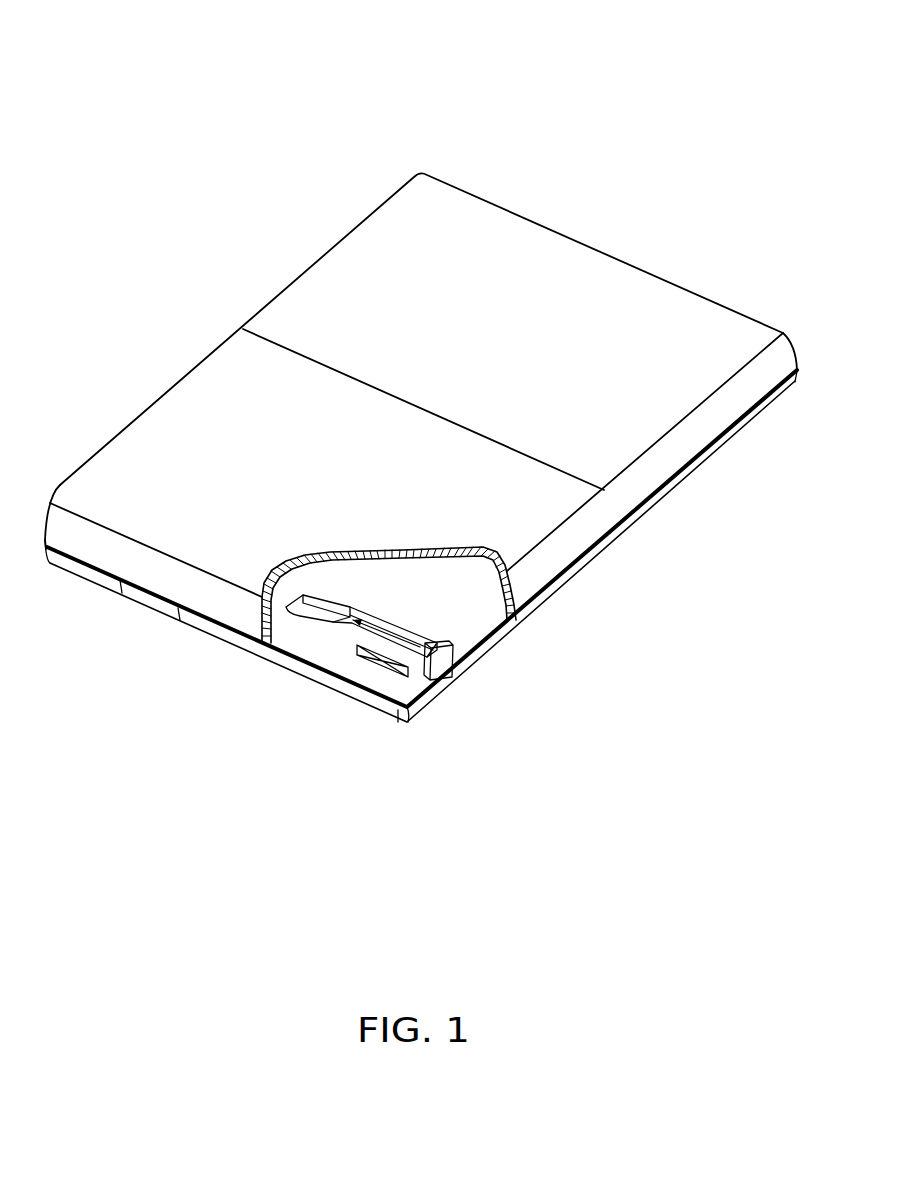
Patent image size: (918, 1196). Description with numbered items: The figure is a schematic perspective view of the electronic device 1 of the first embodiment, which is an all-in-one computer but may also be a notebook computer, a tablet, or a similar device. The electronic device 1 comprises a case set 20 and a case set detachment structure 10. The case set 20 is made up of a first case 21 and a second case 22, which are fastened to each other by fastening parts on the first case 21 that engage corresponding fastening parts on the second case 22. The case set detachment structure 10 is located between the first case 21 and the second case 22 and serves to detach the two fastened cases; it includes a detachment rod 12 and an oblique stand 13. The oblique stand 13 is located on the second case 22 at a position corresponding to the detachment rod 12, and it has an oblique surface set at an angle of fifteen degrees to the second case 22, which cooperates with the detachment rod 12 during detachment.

The electronic device 1 is at (182, 120).
The case set detachment structure 10 is at (462, 619).
The detachment rod 12 is at (335, 627).
The oblique stand 13 is at (378, 654).
The case set 20 is at (115, 323).
The first case 21 is at (213, 367).
The second case 22 is at (158, 607).